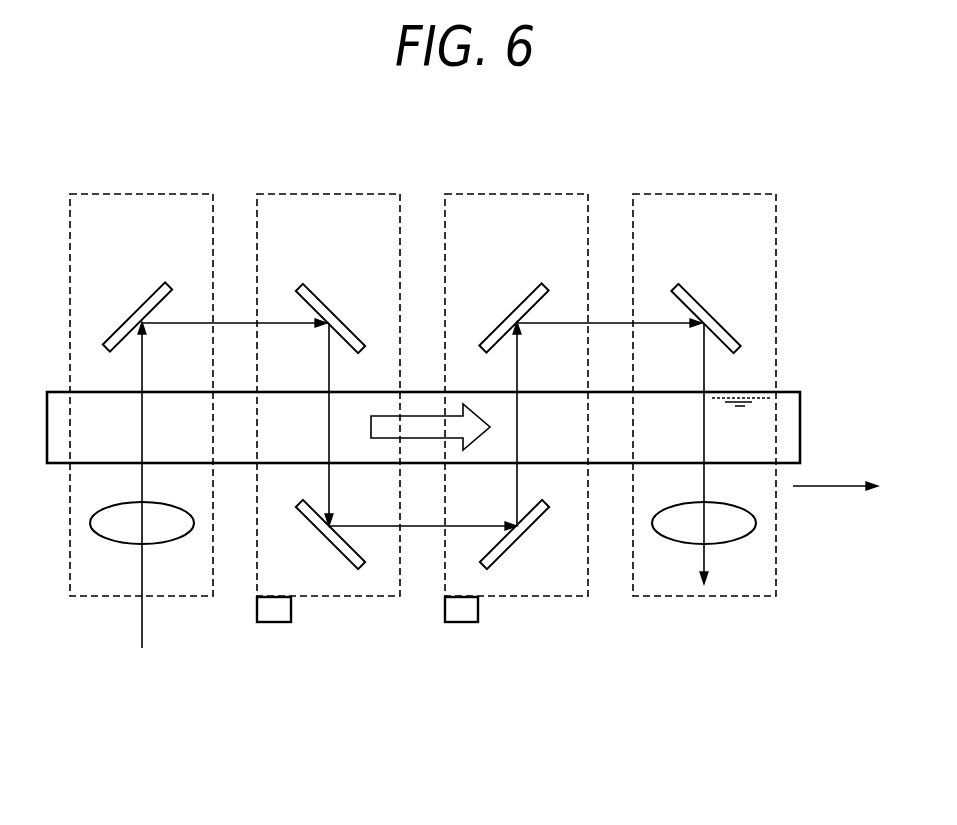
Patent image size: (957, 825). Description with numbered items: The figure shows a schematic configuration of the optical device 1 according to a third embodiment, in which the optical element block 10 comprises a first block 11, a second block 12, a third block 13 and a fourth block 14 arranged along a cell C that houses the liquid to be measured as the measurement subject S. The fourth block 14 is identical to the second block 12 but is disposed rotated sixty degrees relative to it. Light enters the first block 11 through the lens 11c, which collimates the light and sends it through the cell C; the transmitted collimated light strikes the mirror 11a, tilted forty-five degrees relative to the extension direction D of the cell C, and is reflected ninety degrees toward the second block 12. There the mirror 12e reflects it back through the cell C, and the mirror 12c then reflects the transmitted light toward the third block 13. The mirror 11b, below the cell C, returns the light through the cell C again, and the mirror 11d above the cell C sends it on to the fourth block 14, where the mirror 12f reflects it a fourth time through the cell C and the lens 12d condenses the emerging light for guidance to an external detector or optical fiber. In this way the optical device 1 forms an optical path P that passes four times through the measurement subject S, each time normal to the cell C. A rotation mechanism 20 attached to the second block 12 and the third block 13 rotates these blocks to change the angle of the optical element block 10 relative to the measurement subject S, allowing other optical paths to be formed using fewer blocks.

The optical device 1 is at (437, 753).
The optical element block 10 is at (411, 435).
The first block 11 is at (103, 596).
The second block 12 is at (342, 596).
The third block 13 is at (522, 596).
The fourth block 14 is at (682, 596).
The mirror 11a is at (152, 296).
The mirror 11b is at (540, 520).
The lens 11c is at (183, 540).
The mirror 11d is at (525, 296).
The mirror 12c is at (305, 520).
The lens 12d is at (755, 520).
The mirror 12e is at (322, 298).
The mirror 12f is at (696, 298).
The rotation mechanism 20 is at (274, 612).
The cell C is at (800, 422).
The measurement subject S is at (549, 418).
The optical path P is at (706, 552).
The extension direction D is at (835, 498).